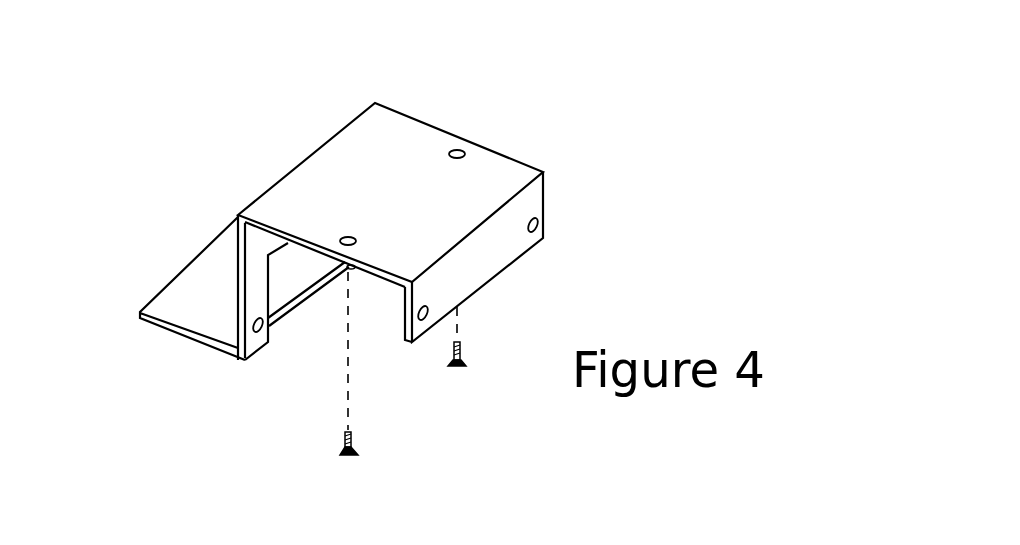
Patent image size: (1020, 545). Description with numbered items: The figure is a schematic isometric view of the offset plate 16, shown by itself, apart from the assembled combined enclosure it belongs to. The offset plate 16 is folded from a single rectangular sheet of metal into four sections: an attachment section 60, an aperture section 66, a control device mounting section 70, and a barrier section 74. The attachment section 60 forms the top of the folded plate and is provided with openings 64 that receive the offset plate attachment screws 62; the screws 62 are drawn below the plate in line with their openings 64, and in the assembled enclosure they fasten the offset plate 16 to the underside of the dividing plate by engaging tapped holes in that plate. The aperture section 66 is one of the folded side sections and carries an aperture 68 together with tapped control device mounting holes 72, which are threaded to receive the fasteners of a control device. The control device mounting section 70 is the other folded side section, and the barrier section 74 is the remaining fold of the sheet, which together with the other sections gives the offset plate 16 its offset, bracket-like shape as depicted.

The offset plate 16 is at (688, 92).
The attachment section 60 is at (377, 172).
The offset plate attachment screws 62 is at (358, 445).
The openings 64 is at (343, 237).
The aperture section 66 is at (258, 250).
The aperture 68 is at (302, 268).
The control device mounting section 70 is at (492, 237).
The tapped control device mounting holes 72 is at (427, 307).
The barrier section 74 is at (187, 304).